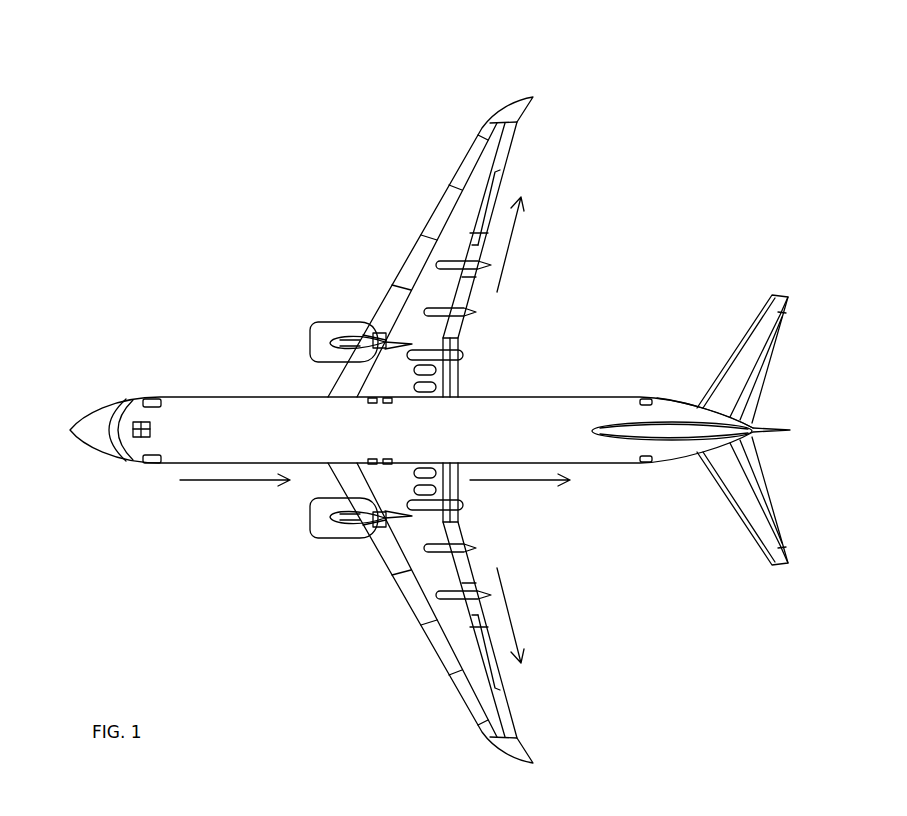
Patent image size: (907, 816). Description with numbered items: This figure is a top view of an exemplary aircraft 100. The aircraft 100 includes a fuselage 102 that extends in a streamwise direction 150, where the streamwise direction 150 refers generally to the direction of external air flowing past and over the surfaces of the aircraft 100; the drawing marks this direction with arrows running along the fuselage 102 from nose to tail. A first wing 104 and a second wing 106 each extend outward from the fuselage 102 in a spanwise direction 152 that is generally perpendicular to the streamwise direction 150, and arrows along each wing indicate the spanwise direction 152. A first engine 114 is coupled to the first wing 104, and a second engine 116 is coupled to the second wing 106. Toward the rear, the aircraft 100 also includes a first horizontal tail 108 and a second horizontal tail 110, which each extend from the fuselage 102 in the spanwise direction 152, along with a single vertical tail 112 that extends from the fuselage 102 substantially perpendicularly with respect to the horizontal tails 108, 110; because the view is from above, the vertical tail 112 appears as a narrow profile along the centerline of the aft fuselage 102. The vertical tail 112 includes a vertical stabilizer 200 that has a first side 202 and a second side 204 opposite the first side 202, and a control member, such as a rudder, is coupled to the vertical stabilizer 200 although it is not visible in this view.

The aircraft 100 is at (168, 113).
The fuselage 102 is at (232, 412).
The first wing 104 is at (432, 240).
The second wing 106 is at (425, 582).
The first horizontal tail 108 is at (790, 298).
The second horizontal tail 110 is at (790, 564).
The vertical tail 112 is at (637, 415).
The first engine 114 is at (338, 333).
The second engine 116 is at (325, 528).
The streamwise direction 150 is at (227, 483).
The spanwise direction 152 is at (512, 248).
The vertical stabilizer 200 is at (673, 433).
The first side 202 is at (688, 440).
The second side 204 is at (688, 462).